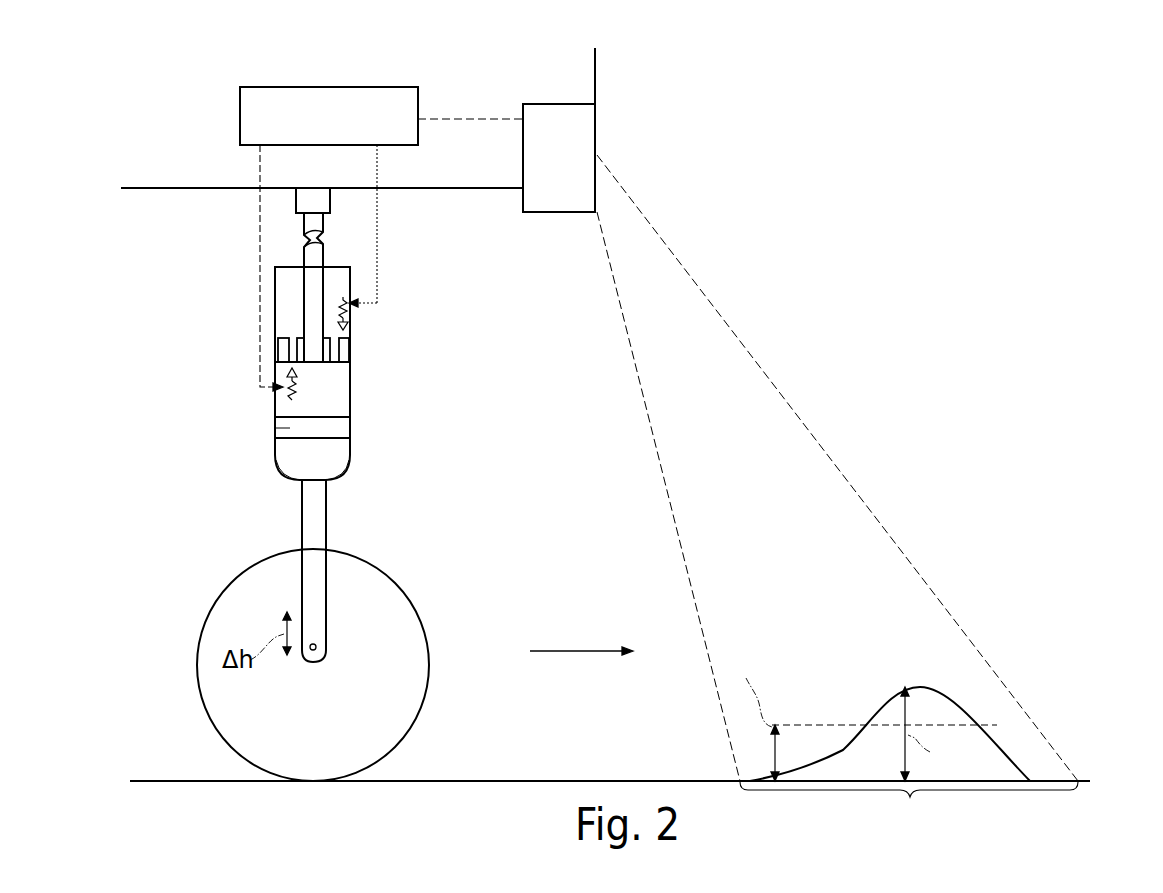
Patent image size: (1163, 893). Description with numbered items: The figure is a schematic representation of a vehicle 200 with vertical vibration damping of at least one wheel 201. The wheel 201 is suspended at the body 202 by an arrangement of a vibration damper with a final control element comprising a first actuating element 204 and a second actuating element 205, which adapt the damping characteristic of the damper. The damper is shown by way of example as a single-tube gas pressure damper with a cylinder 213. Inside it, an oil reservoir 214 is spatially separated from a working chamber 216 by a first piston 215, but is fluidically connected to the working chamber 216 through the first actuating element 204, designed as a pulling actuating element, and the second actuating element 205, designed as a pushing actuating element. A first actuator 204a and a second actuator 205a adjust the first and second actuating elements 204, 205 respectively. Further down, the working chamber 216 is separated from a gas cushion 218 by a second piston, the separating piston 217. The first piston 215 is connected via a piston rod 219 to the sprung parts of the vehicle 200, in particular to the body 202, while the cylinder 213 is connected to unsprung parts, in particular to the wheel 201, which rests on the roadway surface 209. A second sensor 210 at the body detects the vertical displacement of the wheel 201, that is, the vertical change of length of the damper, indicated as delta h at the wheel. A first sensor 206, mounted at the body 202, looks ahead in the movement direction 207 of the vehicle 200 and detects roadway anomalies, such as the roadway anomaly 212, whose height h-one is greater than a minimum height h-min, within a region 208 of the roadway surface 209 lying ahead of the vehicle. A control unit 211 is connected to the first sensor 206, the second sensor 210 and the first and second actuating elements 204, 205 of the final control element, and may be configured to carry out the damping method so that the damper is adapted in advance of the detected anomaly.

The vehicle 200 is at (636, 118).
The wheel 201 is at (402, 598).
The body 202 is at (453, 187).
The first actuating element 204 is at (280, 346).
The first actuator 204a is at (275, 399).
The second actuating element 205 is at (340, 352).
The second actuator 205a is at (351, 313).
The first sensor 206 is at (800, 442).
The movement direction 207 is at (580, 650).
The region 208 is at (912, 798).
The roadway surface 209 is at (470, 778).
The second sensor 210 is at (331, 198).
The control unit 211 is at (381, 236).
The roadway anomaly 212 is at (996, 750).
The cylinder 213 is at (351, 398).
The oil reservoir 214 is at (288, 285).
The first piston 215 is at (275, 350).
The working chamber 216 is at (351, 430).
The separating piston 217 is at (277, 430).
The gas cushion 218 is at (351, 462).
The piston rod 219 is at (324, 240).